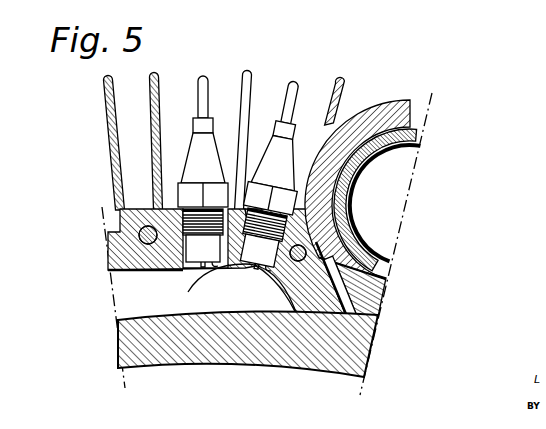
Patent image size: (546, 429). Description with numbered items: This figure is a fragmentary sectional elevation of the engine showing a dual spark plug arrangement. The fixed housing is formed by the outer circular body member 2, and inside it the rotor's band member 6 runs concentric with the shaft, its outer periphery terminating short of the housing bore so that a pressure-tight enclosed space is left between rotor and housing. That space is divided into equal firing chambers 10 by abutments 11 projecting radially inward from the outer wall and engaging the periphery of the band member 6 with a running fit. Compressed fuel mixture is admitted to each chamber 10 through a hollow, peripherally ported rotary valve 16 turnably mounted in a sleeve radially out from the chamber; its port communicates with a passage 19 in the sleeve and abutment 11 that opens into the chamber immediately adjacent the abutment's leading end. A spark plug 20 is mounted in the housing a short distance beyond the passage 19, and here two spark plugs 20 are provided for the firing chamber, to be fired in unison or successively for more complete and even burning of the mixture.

The outer circular body member 2 is at (138, 209).
The band member 6 is at (220, 347).
The chamber 10 is at (172, 306).
The abutment 11 is at (313, 327).
The rotary valve 16 is at (348, 217).
The passage 19 is at (315, 287).
The spark plug 20 is at (201, 245).